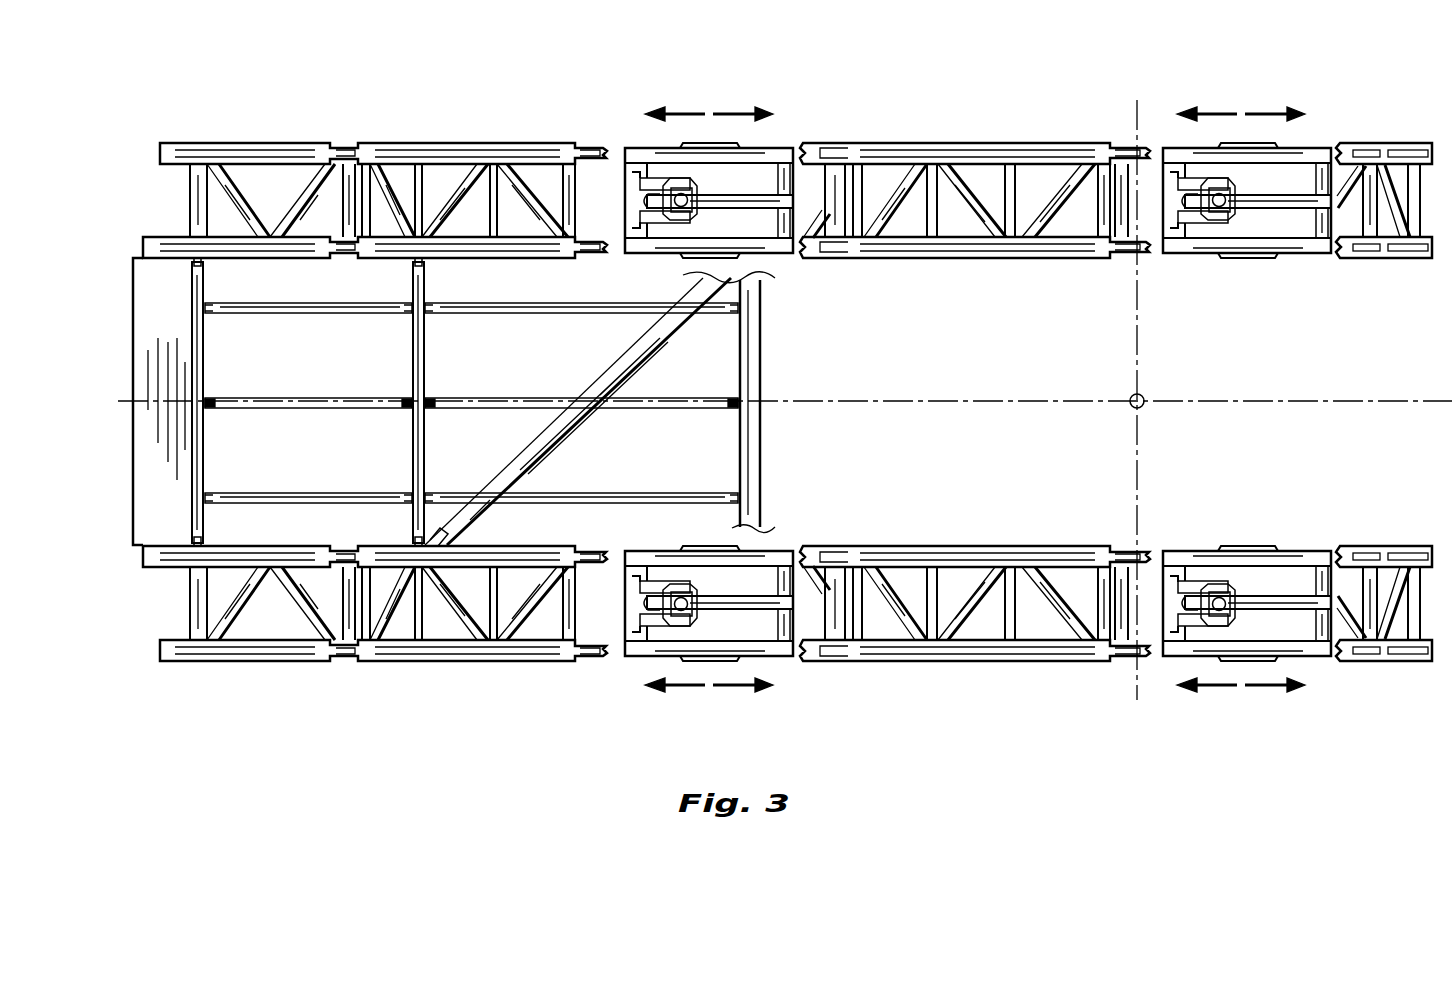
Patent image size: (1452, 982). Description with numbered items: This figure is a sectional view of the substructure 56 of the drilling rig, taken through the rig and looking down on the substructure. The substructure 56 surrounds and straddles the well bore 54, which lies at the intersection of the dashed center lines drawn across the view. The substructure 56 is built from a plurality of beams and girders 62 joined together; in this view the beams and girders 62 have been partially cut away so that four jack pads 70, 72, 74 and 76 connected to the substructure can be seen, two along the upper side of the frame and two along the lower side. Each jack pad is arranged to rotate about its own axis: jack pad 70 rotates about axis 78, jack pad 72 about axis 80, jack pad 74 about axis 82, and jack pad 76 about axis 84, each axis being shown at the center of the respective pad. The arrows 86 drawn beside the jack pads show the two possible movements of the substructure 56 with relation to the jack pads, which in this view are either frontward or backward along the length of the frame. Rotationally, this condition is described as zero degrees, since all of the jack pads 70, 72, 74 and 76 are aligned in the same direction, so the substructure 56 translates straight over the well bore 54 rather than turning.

The well bore 54 is at (1143, 397).
The substructure 56 is at (801, 114).
The beams and girders 62 is at (415, 148).
The jack pad 70 is at (703, 165).
The jack pad 72 is at (1247, 181).
The jack pad 74 is at (673, 646).
The jack pad 76 is at (1247, 616).
The axis 78 is at (678, 208).
The axis 80 is at (1219, 246).
The axis 82 is at (676, 612).
The axis 84 is at (1248, 554).
The arrows 86 is at (685, 110).